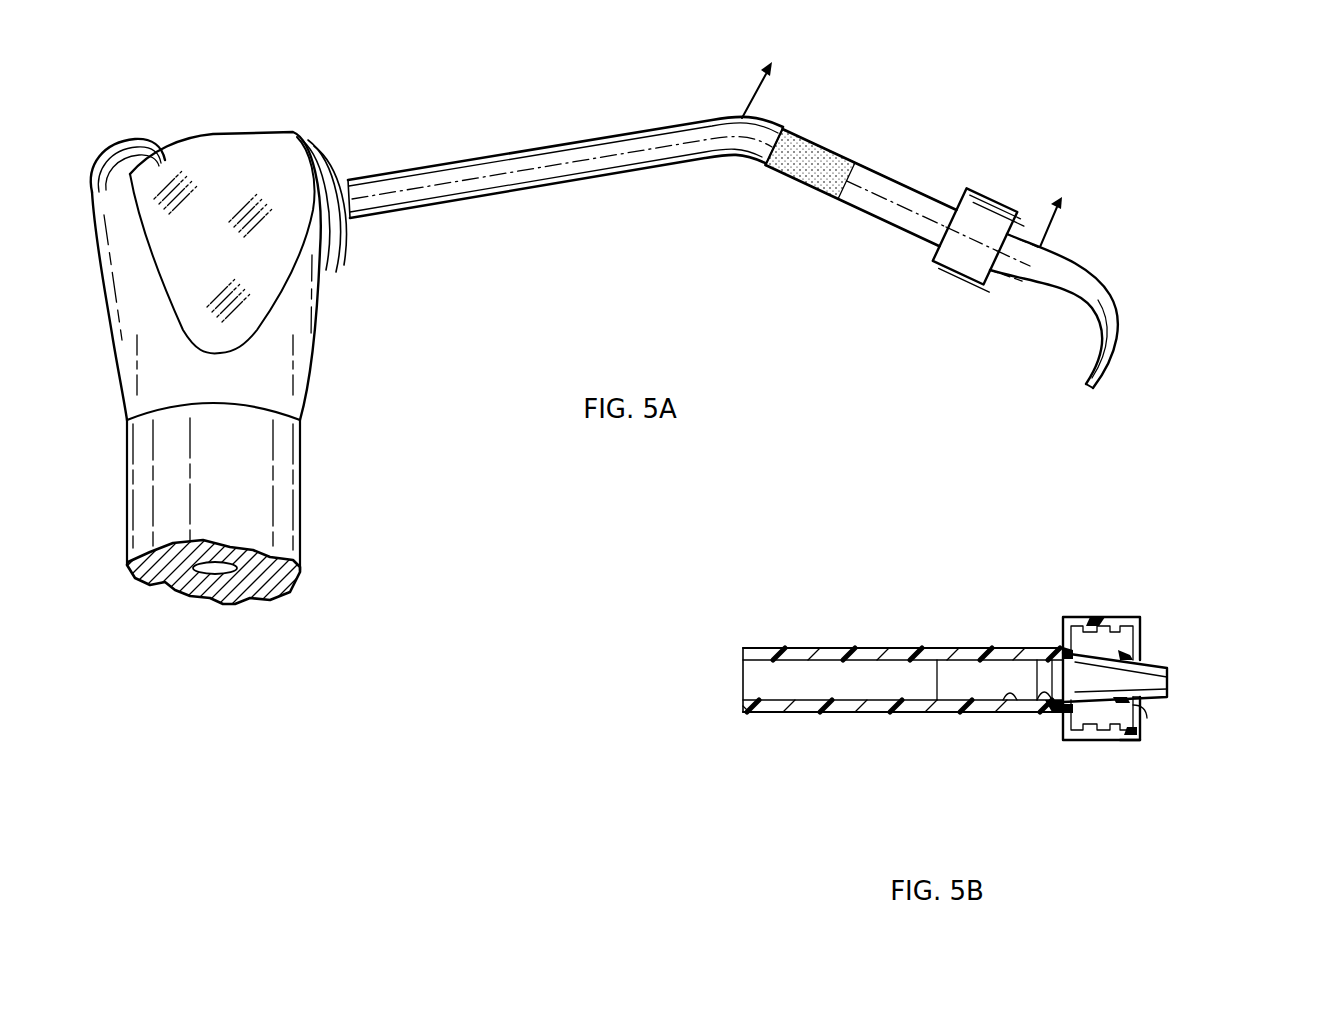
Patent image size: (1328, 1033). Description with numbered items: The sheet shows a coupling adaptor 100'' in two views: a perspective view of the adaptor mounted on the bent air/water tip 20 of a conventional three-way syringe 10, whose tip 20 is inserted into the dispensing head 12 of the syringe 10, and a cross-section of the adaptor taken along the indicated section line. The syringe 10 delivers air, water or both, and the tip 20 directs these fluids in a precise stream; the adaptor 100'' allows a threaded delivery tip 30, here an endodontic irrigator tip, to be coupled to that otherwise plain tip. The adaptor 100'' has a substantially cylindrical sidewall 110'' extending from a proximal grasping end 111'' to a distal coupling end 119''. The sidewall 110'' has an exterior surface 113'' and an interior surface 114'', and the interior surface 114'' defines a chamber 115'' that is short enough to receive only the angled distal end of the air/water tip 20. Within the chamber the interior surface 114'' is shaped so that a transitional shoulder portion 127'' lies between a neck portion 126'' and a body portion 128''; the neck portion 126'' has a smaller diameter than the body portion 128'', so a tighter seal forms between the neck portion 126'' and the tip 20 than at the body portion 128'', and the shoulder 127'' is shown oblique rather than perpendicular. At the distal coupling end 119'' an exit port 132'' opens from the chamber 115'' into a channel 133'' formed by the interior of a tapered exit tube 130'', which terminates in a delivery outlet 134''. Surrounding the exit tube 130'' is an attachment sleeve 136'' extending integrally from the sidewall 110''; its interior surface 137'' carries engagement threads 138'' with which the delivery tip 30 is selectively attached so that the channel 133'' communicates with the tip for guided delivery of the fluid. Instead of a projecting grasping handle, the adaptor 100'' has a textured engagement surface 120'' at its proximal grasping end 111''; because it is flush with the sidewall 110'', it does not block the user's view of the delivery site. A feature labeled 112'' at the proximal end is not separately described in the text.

In FIG. 5A, the three-way syringe 10 is at (350, 127).
In FIG. 5A, the dispensing head 12 is at (256, 131).
In FIG. 5A, the air/water tip 20 is at (373, 216).
In FIG. 5A, the delivery tip 30 is at (1077, 270).
In FIG. 5A, the coupling adaptor 100'' is at (895, 211).
In FIG. 5B, the coupling adaptor 100'' is at (939, 653).
In FIG. 5B, the sidewall 110'' is at (823, 639).
In FIG. 5A, the proximal grasping end 111'' is at (724, 182).
In FIG. 5B, the proximal grasping end 111'' is at (712, 739).
In FIG. 5B, the proximal end face 112'' is at (663, 657).
In FIG. 5B, the exterior surface 113'' is at (903, 614).
In FIG. 5B, the interior surface 114'' is at (903, 729).
In FIG. 5B, the chamber 115'' is at (933, 603).
In FIG. 5B, the distal coupling end 119'' is at (1017, 581).
In FIG. 5A, the textured engagement surface 120'' is at (817, 197).
In FIG. 5B, the neck portion 126'' is at (1010, 745).
In FIG. 5B, the transitional shoulder portion 127'' is at (1008, 630).
In FIG. 5B, the body portion 128'' is at (978, 728).
In FIG. 5B, the exit tube 130'' is at (1170, 696).
In FIG. 5B, the exit port 132'' is at (1023, 751).
In FIG. 5B, the channel 133'' is at (1179, 651).
In FIG. 5B, the delivery outlet 134'' is at (1185, 672).
In FIG. 5B, the attachment sleeve 136'' is at (1192, 788).
In FIG. 5B, the interior surface of attachment sleeve 137'' is at (1206, 748).
In FIG. 5B, the engagement threads 138'' is at (1211, 719).